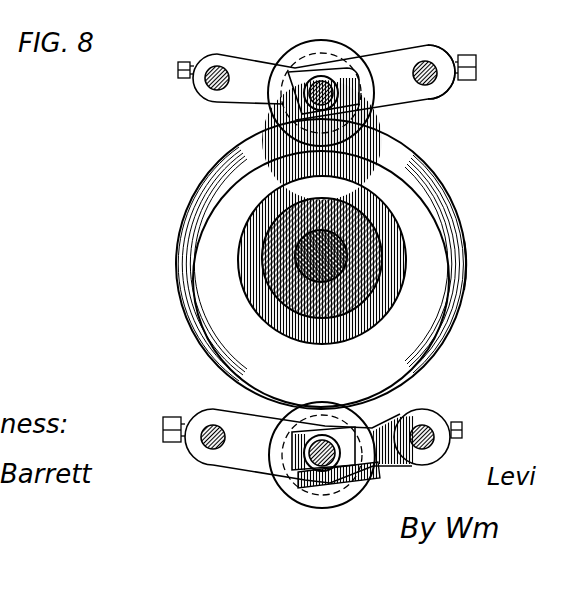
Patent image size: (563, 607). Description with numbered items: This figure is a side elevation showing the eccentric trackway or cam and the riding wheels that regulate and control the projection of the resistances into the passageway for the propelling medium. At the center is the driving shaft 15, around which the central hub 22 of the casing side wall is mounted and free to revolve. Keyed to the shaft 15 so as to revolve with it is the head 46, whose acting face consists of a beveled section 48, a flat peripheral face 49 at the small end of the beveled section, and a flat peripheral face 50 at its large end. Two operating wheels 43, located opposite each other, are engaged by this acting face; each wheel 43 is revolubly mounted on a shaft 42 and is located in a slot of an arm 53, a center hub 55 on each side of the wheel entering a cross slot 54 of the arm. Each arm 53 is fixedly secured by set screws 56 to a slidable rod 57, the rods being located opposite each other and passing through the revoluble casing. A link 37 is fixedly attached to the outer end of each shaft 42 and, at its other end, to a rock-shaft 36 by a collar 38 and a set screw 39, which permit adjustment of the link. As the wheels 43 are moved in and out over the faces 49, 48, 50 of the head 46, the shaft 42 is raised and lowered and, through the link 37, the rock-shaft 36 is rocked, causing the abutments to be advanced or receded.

The shaft 15 is at (300, 272).
The central hub 22 is at (273, 243).
The rock-shaft 36 is at (224, 72).
The link 37 is at (244, 105).
The collar 38 is at (198, 96).
The set screw 39 is at (186, 62).
The shaft 42 is at (292, 121).
The operating wheel 43 is at (340, 56).
The head 46 is at (466, 262).
The beveled section 48 is at (443, 153).
The flat peripheral face 49 is at (405, 173).
The flat peripheral face 50 is at (409, 143).
The arm 53 is at (320, 255).
The cross slot 54 is at (356, 70).
The center hub 55 is at (322, 78).
The set screws 56 is at (477, 63).
The slidable rod 57 is at (432, 64).